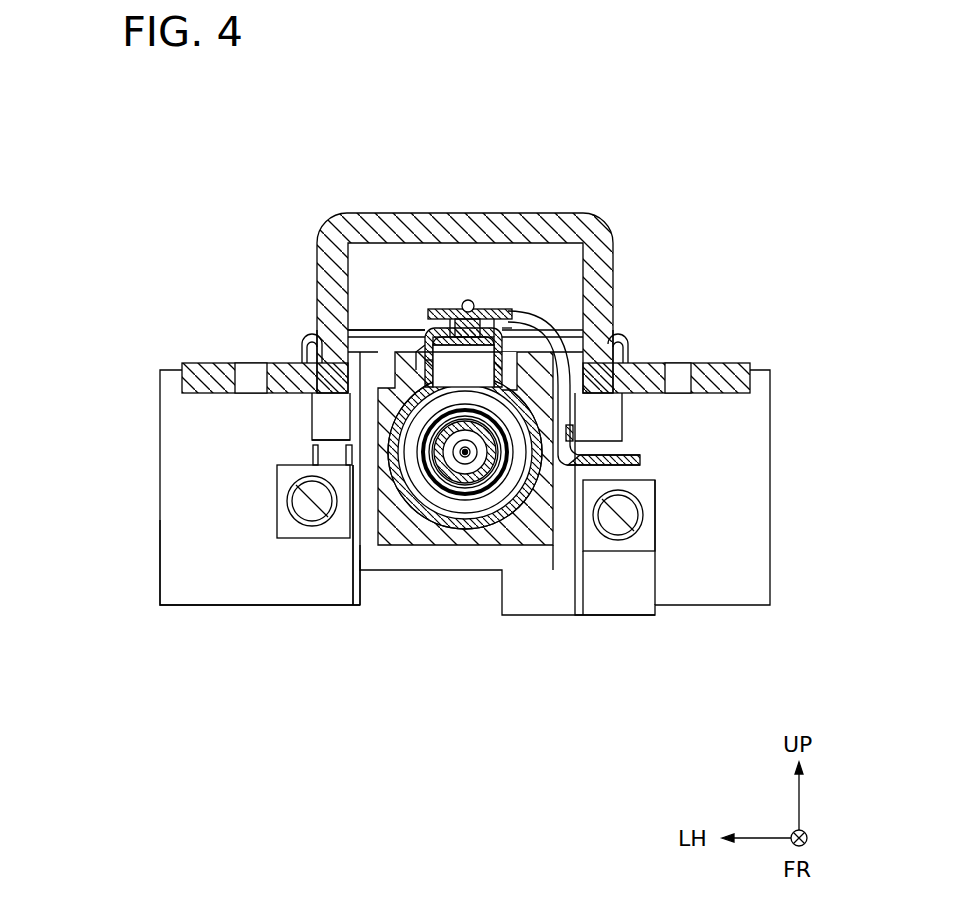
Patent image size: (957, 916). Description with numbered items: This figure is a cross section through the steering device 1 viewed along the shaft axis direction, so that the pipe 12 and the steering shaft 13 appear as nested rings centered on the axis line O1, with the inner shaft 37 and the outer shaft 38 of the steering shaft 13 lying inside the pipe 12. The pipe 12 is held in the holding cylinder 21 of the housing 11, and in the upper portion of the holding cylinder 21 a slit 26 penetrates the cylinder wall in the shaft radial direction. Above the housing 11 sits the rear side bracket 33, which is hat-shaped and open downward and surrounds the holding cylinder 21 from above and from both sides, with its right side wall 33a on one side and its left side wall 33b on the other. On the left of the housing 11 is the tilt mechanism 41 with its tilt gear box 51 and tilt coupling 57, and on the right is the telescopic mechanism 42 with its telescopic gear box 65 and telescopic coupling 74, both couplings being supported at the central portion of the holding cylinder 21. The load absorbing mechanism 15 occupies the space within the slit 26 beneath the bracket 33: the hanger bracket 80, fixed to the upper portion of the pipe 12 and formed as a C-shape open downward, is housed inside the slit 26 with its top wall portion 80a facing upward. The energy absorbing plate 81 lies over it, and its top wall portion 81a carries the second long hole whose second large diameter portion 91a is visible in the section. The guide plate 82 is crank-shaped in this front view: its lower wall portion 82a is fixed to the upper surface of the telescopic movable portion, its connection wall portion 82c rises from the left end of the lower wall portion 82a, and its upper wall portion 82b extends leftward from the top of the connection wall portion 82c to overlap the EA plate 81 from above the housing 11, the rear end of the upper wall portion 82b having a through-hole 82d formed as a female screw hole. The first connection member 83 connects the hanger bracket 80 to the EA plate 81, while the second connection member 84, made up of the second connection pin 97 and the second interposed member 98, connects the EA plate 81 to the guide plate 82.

The steering device 1 is at (650, 152).
The housing 11 is at (400, 550).
The pipe 12 is at (360, 436).
The steering shaft 13 is at (502, 567).
The load absorbing mechanism 15 is at (548, 318).
The holding cylinder 21 is at (540, 405).
The slit 26 is at (418, 348).
The rear side bracket 33 is at (464, 288).
The right side wall 33a is at (613, 264).
The left side wall 33b is at (322, 260).
The inner shaft 37 is at (463, 478).
The outer shaft 38 is at (492, 462).
The tilt mechanism 41 is at (181, 537).
The telescopic mechanism 42 is at (750, 515).
The tilt gear box 51 is at (160, 581).
The tilt coupling 57 is at (277, 538).
The telescopic gear box 65 is at (770, 501).
The telescopic coupling 74 is at (655, 543).
The hanger bracket 80 is at (628, 306).
The top wall portion 80a is at (505, 445).
The energy absorbing plate 81 is at (458, 221).
The top wall portion 81a is at (447, 318).
The guide plate 82 is at (512, 340).
The lower wall portion 82a is at (640, 456).
The upper wall portion 82b is at (455, 315).
The connection wall portion 82c is at (567, 366).
The through-hole 82d is at (500, 305).
The first connection member 83 is at (417, 500).
The second connection member 84 is at (476, 340).
The second large diameter portion 91a is at (447, 437).
The second connection pin 97 is at (466, 300).
The second interposed member 98 is at (548, 312).
The axis line O1 is at (465, 452).